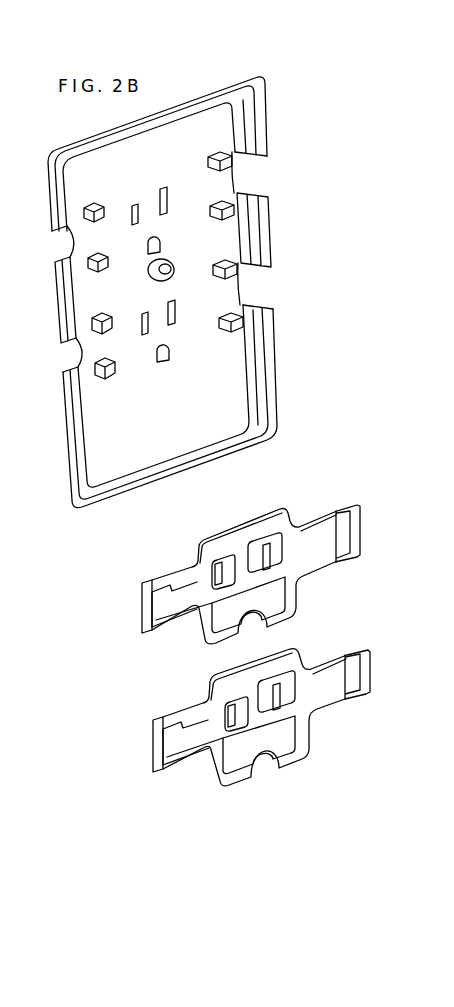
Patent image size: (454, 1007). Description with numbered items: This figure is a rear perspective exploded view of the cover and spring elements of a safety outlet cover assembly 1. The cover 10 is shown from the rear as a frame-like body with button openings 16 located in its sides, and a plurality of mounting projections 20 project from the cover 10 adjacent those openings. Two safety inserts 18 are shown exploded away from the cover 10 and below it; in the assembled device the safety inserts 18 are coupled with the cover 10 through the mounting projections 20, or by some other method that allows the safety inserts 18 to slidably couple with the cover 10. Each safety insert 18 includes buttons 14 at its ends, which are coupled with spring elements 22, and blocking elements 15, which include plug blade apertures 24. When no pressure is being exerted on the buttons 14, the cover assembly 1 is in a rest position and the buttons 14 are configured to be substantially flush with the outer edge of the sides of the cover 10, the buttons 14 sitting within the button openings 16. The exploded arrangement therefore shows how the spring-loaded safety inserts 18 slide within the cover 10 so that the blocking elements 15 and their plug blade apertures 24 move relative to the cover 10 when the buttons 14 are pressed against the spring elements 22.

The safety outlet cover assembly 1 is at (247, 50).
The cover 10 is at (95, 512).
The buttons 14 is at (154, 745).
The blocking elements 15 is at (210, 727).
The button openings 16 is at (243, 172).
The safety inserts 18 is at (339, 489).
The mounting projections 20 is at (216, 152).
The spring elements 22 is at (208, 680).
The plug blade apertures 24 is at (233, 726).